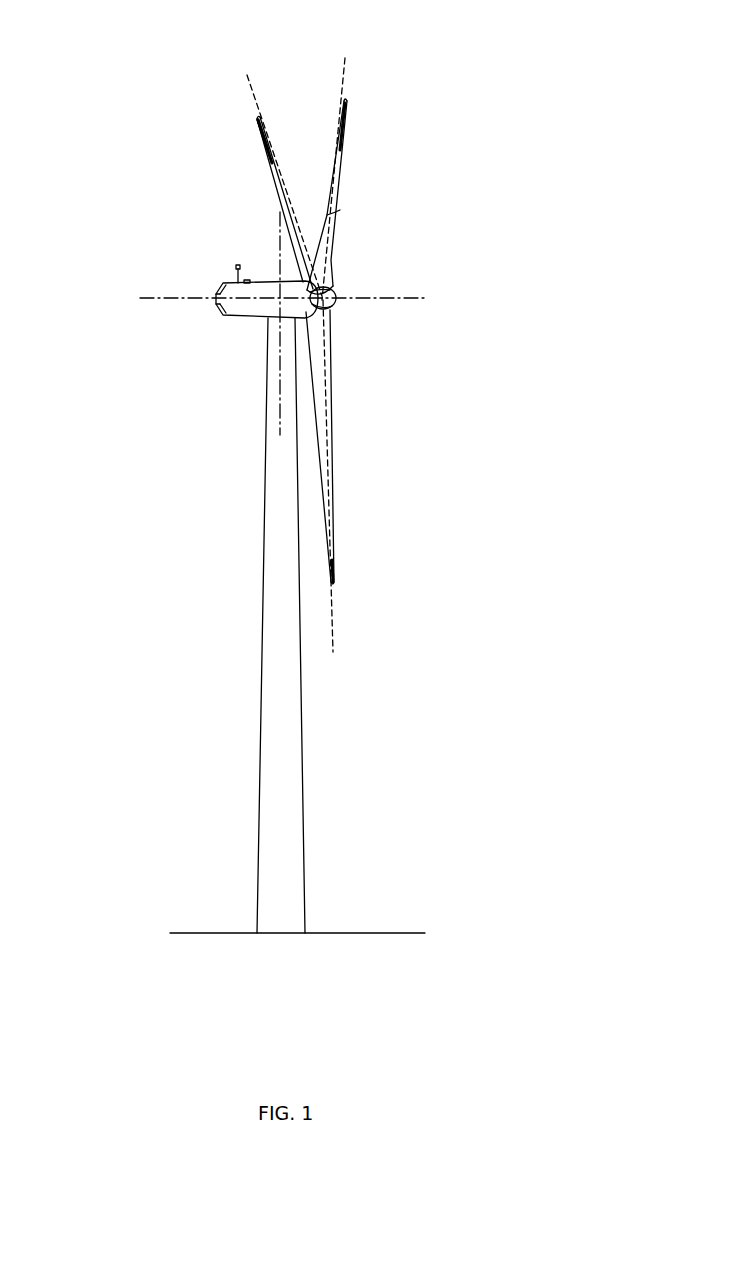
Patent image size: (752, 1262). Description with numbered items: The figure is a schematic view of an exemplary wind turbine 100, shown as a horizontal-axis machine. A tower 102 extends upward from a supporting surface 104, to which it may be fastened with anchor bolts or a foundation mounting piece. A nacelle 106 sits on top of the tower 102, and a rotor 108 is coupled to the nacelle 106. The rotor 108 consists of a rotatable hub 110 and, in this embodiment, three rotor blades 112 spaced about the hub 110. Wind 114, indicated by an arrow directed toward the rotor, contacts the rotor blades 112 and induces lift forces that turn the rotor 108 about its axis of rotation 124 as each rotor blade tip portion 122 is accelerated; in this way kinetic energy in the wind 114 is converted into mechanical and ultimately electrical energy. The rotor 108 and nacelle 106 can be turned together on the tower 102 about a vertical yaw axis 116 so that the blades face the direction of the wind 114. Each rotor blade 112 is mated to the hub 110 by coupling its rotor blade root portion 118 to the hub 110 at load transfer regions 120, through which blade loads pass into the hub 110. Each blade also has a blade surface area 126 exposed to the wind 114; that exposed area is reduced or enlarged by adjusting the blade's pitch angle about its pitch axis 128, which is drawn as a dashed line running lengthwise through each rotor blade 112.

The wind turbine 100 is at (122, 38).
The tower 102 is at (258, 783).
The supporting surface 104 is at (210, 930).
The nacelle 106 is at (250, 320).
The rotor 108 is at (403, 186).
The rotatable hub 110 is at (340, 292).
The rotor blade 112 is at (275, 168).
The wind 114 is at (627, 298).
The yaw axis 116 is at (280, 232).
The rotor blade root portion 118 is at (330, 372).
The load transfer region 120 is at (335, 270).
The rotor blade tip portion 122 is at (258, 130).
The axis of rotation 124 is at (412, 303).
The blade surface area 126 is at (333, 240).
The pitch axis 128 is at (247, 92).